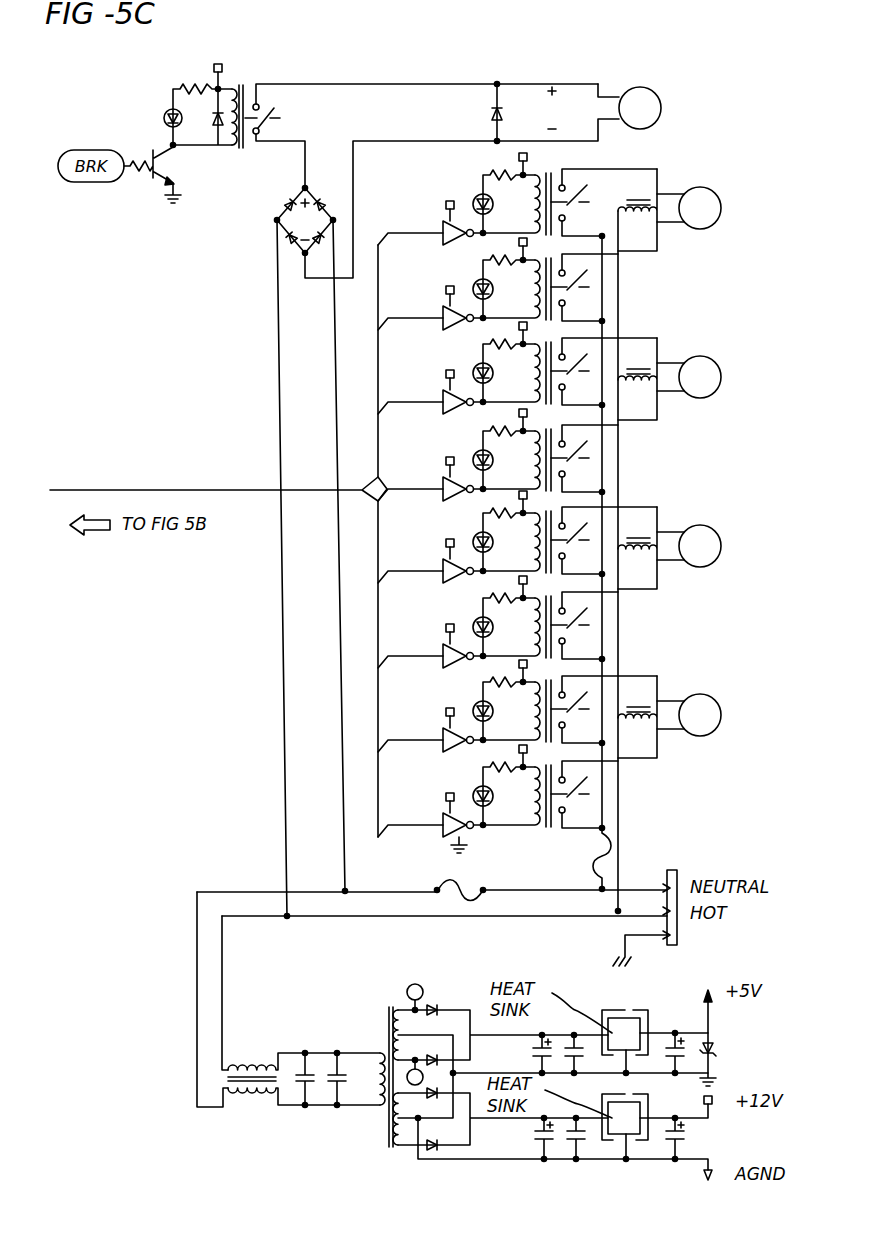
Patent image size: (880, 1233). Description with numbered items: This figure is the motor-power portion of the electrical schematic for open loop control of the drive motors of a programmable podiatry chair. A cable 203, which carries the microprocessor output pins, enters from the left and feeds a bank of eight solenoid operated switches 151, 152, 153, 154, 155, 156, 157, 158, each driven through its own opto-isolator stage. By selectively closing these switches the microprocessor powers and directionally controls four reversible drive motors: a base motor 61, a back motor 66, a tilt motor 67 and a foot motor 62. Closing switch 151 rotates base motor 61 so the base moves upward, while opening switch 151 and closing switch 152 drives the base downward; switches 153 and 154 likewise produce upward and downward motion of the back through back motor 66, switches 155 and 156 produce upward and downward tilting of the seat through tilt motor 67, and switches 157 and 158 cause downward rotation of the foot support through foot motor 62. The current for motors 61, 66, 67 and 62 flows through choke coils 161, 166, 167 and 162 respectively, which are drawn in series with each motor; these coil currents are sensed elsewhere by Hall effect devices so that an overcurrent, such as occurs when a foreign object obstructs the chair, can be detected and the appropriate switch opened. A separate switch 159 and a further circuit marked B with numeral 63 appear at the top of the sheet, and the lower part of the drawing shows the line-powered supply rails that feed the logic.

The solenoid operated switch 151 is at (582, 193).
The solenoid operated switch 152 is at (580, 293).
The solenoid operated switch 153 is at (598, 356).
The solenoid operated switch 154 is at (573, 451).
The solenoid operated switch 155 is at (573, 537).
The solenoid operated switch 156 is at (573, 624).
The solenoid operated switch 157 is at (577, 708).
The solenoid operated switch 158 is at (578, 800).
The brake switch 159 is at (270, 106).
The choke coil 161 is at (640, 190).
The choke coil 162 is at (660, 712).
The choke coil 166 is at (660, 362).
The choke coil 167 is at (657, 533).
The base motor 61 is at (686, 189).
The foot motor 62 is at (723, 701).
The back motor 66 is at (713, 357).
The tilt motor 67 is at (712, 529).
The brake 63 is at (651, 91).
The cable 203 is at (165, 490).